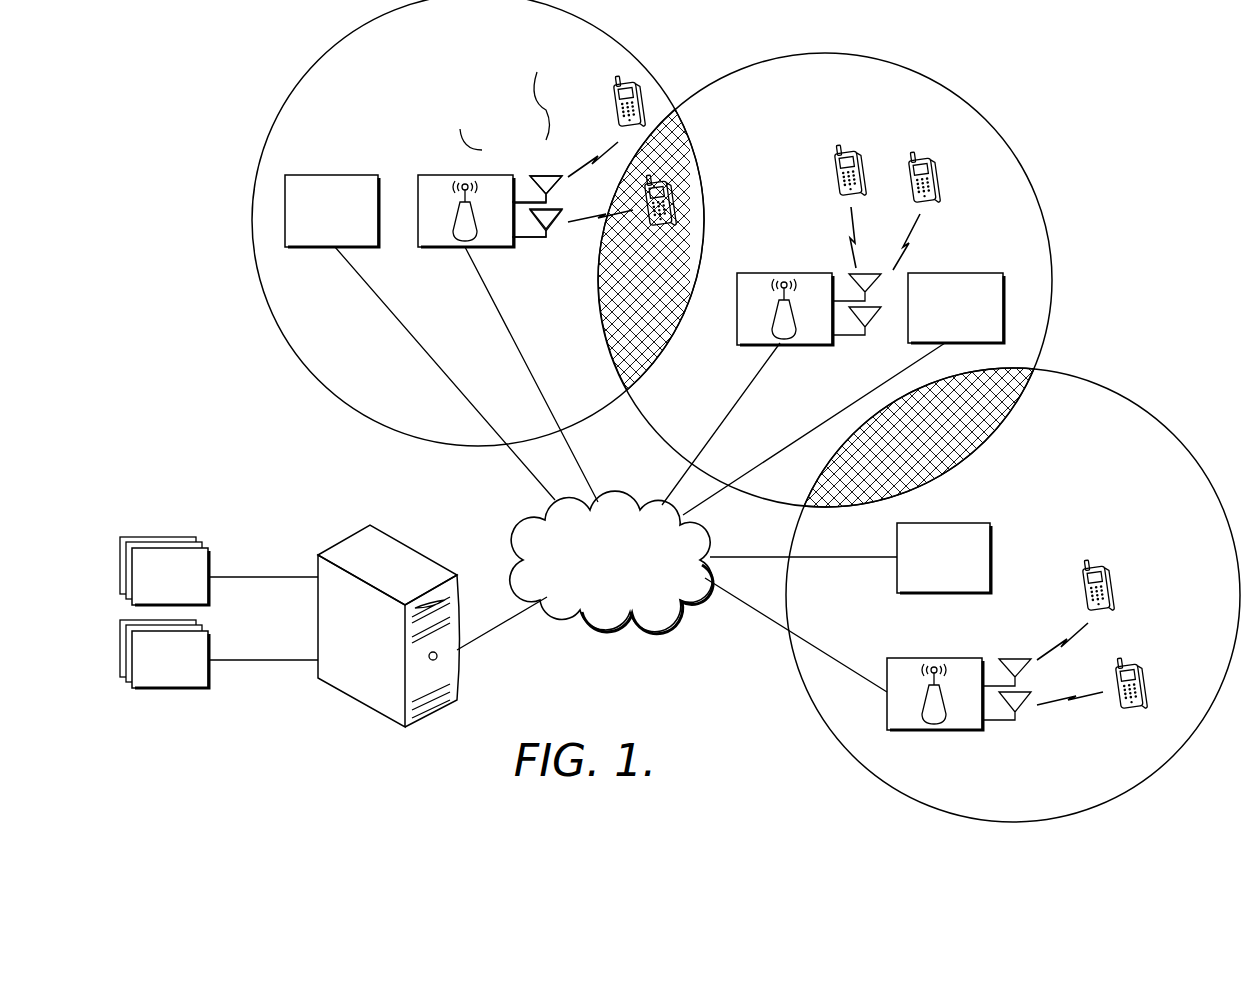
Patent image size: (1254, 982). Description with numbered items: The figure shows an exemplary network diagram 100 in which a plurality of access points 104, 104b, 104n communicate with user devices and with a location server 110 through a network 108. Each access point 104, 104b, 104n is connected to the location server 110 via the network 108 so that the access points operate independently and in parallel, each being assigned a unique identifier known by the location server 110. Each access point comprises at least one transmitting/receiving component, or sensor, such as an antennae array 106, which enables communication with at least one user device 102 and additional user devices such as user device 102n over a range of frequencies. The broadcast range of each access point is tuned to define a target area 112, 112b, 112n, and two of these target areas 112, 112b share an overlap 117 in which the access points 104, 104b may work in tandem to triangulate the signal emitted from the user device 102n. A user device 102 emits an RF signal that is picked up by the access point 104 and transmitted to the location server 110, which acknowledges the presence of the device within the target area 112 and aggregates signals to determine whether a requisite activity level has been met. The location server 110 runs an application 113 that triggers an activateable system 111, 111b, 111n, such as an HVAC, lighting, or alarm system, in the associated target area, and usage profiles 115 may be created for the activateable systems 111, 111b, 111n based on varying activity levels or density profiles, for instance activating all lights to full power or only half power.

The network diagram 100 is at (222, 94).
The user device 102 is at (614, 102).
The user device 102n is at (683, 213).
The access point 104 is at (450, 175).
The access point 104b is at (737, 328).
The access point 104n is at (937, 658).
The antennae array 106 is at (546, 176).
The network 108 is at (616, 617).
The location server 110 is at (407, 541).
The activateable system 111 is at (320, 175).
The activateable system 111b is at (960, 273).
The activateable system 111n is at (945, 523).
The target area 112 is at (630, 45).
The target area 112b is at (955, 97).
The target area 112n is at (1135, 408).
The application 113 is at (212, 563).
The usage profile 115 is at (212, 646).
The overlap 117 is at (692, 135).